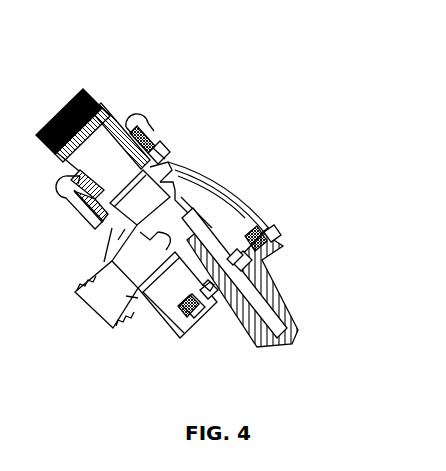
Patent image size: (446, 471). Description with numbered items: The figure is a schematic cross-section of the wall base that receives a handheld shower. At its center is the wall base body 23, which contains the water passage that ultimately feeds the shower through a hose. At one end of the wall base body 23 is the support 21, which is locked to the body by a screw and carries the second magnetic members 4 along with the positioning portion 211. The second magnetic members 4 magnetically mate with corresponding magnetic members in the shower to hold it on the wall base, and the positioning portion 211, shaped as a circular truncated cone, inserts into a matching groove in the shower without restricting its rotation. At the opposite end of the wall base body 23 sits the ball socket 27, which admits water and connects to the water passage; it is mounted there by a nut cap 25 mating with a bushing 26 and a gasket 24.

The ball socket 27 is at (112, 128).
The bushing 26 is at (140, 120).
The nut cap 25 is at (170, 152).
The gasket 24 is at (150, 167).
The wall base body 23 is at (230, 190).
The second magnetic members 4 is at (268, 233).
The support 21 is at (281, 235).
The positioning portion 211 is at (280, 310).